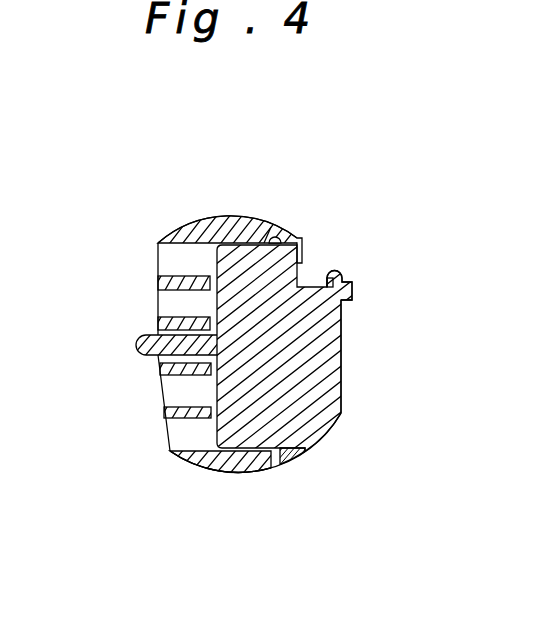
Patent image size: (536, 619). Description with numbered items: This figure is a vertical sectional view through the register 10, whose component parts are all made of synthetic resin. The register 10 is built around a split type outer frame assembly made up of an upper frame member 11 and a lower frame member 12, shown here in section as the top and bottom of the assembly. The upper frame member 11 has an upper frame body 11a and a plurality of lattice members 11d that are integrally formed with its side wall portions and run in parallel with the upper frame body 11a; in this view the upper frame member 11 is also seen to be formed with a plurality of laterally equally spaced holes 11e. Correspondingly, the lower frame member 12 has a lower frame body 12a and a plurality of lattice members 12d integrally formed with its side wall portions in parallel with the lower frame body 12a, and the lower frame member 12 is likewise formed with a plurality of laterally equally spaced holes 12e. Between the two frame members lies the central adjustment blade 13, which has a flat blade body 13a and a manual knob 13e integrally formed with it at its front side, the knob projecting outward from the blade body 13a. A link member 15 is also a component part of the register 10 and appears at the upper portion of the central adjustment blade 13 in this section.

The register 10 is at (325, 229).
The upper frame member 11 is at (171, 220).
The upper frame body 11a is at (224, 222).
The lattice members 11d is at (160, 322).
The holes 11e is at (272, 228).
The lower frame member 12 is at (193, 477).
The lower frame body 12a is at (234, 462).
The lattice members 12d is at (160, 377).
The holes 12e is at (277, 463).
The central adjustment blade 13 is at (344, 420).
The flat blade body 13a is at (322, 335).
The manual knob 13e is at (137, 348).
The link member 15 is at (345, 280).